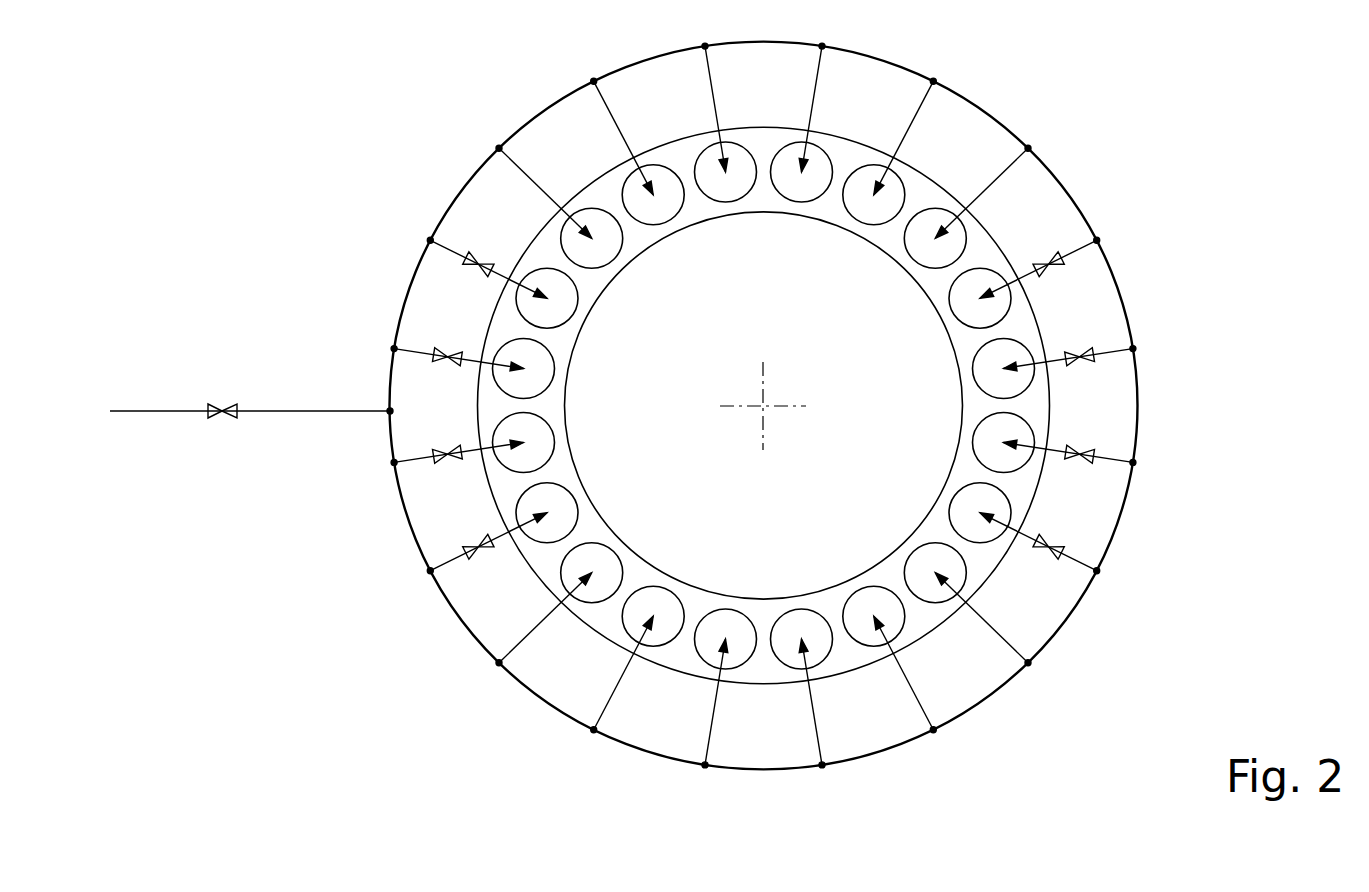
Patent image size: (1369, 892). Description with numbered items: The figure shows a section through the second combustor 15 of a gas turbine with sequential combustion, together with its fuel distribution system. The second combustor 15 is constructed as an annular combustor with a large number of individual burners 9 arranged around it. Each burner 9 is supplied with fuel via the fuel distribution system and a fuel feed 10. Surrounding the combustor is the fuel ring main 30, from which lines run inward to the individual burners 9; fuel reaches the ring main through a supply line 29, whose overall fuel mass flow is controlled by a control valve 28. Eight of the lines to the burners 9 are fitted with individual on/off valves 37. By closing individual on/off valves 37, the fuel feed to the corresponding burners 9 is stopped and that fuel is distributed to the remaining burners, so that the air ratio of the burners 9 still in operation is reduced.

The burner 9 is at (982, 298).
The fuel feed 10 is at (513, 169).
The second combustor 15 is at (927, 618).
The control valve 28 is at (221, 417).
The supply line 29 is at (234, 412).
The fuel ring main 30 is at (525, 685).
The on/off valve 37 is at (470, 267).